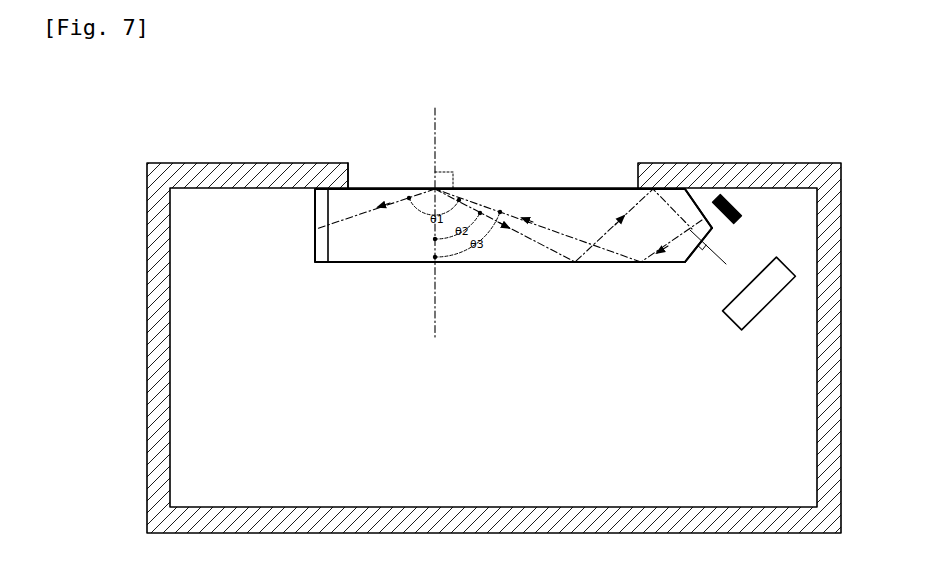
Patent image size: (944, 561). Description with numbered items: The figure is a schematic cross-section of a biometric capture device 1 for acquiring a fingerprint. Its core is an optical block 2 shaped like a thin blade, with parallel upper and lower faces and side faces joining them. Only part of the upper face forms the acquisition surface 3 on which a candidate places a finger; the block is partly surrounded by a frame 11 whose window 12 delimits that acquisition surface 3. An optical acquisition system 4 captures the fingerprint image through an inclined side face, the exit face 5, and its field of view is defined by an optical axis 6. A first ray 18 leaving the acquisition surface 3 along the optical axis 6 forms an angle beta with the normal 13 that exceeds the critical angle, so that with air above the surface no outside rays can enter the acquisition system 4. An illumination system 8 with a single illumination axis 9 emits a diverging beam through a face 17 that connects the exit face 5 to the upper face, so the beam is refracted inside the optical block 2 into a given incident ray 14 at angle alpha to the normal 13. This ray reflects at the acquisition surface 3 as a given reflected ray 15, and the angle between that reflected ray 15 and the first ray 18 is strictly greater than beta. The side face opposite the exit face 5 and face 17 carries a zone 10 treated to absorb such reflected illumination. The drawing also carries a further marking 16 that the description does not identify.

The biometric capture device 1 is at (454, 348).
The optical block 2 is at (500, 215).
The acquisition surface 3 is at (595, 188).
The optical acquisition system 4 is at (738, 318).
The exit face 5 is at (714, 232).
The optical axis 6 is at (732, 268).
The illumination system 8 is at (738, 171).
The illumination axis 9 is at (711, 195).
The zone 10 is at (315, 228).
The frame 11 is at (157, 206).
The window 12 is at (350, 186).
The normal 13 is at (437, 110).
The given incident ray 14 is at (562, 230).
The given reflected ray 15 is at (388, 203).
The light path 16 is at (568, 225).
The face 17 is at (699, 205).
The first ray 18 is at (546, 263).